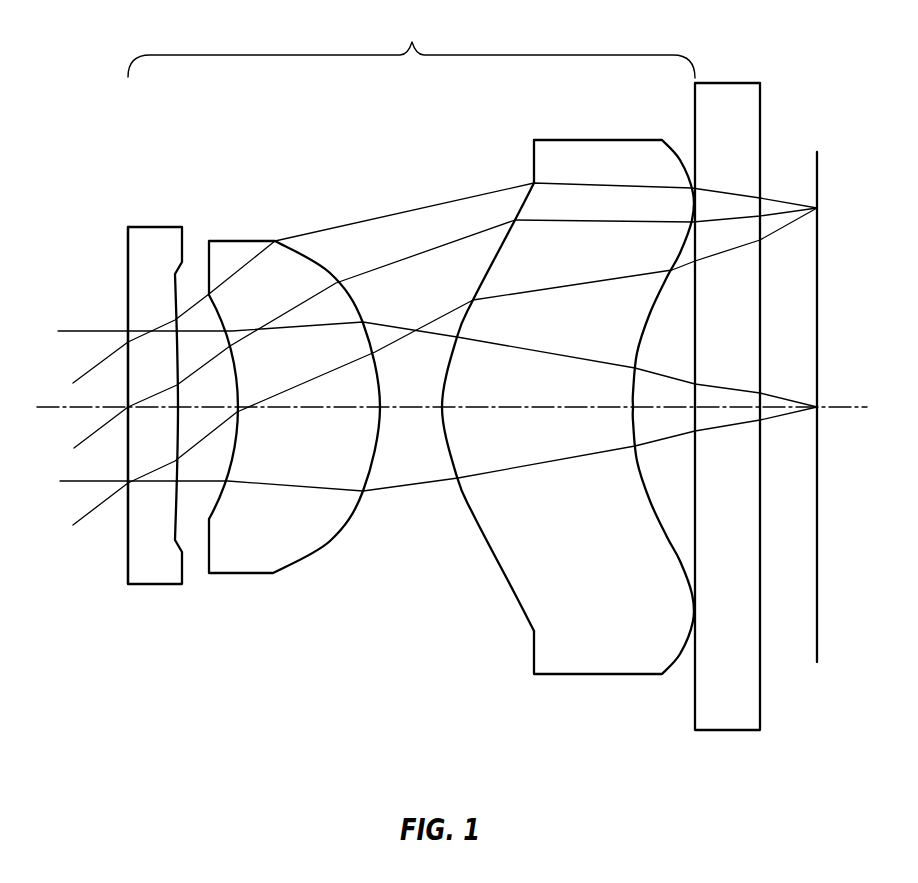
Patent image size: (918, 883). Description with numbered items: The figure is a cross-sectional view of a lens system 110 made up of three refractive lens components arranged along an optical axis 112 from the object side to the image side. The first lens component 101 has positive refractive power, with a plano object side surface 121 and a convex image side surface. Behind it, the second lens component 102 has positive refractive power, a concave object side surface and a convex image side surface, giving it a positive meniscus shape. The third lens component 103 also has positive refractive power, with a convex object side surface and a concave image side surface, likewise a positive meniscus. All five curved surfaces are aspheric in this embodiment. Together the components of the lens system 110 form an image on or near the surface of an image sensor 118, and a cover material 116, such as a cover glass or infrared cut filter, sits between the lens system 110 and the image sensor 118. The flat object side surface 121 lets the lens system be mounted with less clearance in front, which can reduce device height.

The lens system 110 is at (411, 46).
The first lens component 101 is at (155, 227).
The second lens component 102 is at (253, 240).
The third lens component 103 is at (598, 139).
The optical axis 112 is at (56, 407).
The cover material 116 is at (728, 730).
The image sensor 118 is at (818, 643).
The first object side lens surface 121 is at (128, 570).